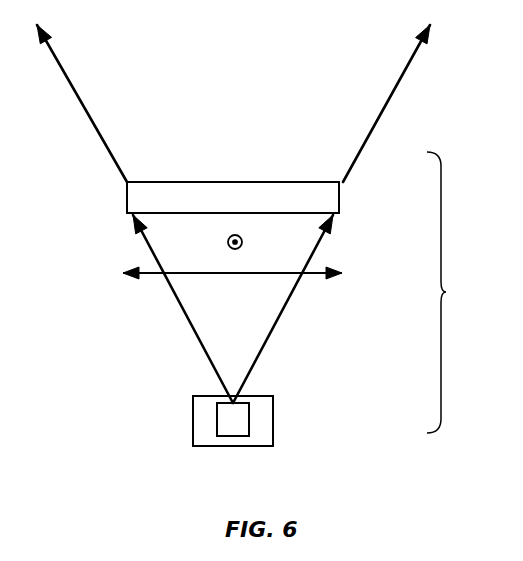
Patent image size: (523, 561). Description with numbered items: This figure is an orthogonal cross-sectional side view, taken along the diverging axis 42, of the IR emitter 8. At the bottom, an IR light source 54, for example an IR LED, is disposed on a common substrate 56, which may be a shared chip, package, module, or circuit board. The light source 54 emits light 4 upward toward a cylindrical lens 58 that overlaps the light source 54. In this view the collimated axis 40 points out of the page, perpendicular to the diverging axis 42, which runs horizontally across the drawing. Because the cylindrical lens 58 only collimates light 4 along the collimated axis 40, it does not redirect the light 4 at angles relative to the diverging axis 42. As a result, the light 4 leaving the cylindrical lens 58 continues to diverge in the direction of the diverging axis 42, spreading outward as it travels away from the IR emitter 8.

The light 4 is at (68, 82).
The IR emitter 8 is at (446, 292).
The collimated axis 40 is at (243, 242).
The diverging axis 42 is at (155, 274).
The light source 54 is at (233, 436).
The common substrate 56 is at (249, 418).
The cylindrical lens 58 is at (340, 200).